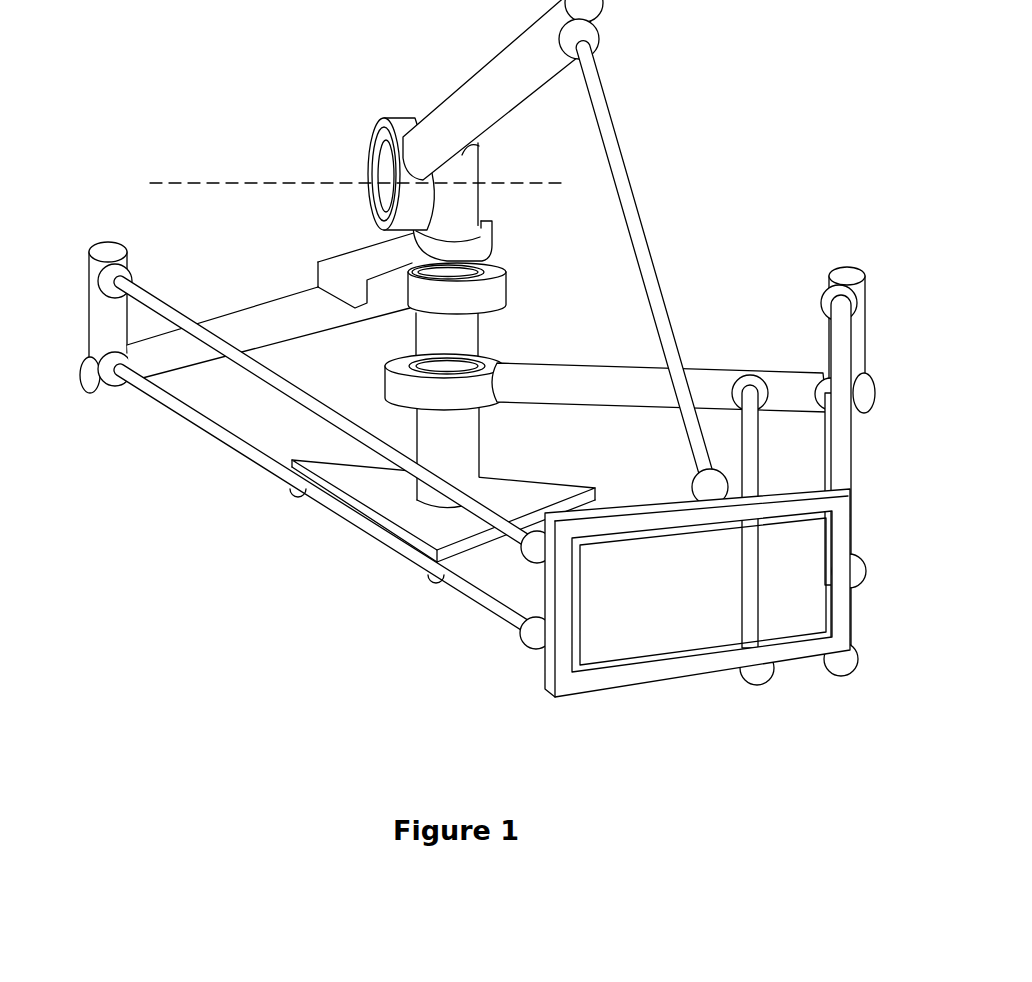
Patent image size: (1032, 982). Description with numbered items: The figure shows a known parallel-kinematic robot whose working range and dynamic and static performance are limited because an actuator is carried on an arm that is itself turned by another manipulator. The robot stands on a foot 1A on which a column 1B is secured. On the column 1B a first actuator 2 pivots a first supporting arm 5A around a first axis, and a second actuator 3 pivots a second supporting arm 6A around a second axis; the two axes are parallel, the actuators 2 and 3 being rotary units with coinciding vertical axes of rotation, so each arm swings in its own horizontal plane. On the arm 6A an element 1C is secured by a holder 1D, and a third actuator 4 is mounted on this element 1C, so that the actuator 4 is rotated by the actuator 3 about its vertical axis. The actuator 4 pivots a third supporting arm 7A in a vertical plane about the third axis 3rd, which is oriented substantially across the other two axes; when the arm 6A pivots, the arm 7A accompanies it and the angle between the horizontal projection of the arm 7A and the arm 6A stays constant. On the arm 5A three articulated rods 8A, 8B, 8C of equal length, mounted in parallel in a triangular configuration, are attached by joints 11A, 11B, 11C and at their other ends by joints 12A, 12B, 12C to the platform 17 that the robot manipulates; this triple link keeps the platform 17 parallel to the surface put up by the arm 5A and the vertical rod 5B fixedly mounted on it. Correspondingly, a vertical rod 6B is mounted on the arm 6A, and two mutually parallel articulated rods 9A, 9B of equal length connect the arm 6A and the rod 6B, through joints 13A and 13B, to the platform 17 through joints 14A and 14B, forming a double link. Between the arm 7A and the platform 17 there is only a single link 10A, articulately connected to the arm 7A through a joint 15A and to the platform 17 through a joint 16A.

The foot 1A is at (520, 493).
The column 1B is at (458, 337).
The element 1C is at (458, 168).
The holder 1D is at (470, 245).
The first actuator 2 is at (397, 383).
The second actuator 3 is at (492, 288).
The third actuator 4 is at (383, 132).
The third axis 3rd is at (185, 183).
The first supporting arm 5A is at (637, 383).
The vertical rod 5B is at (868, 330).
The second supporting arm 6A is at (287, 307).
The vertical rod 6B is at (97, 312).
The third supporting arm 7A is at (482, 88).
The articulated rod 8A is at (843, 438).
The articulated rod 8B is at (828, 470).
The articulated rod 8C is at (750, 552).
The articulated rod 9A is at (283, 387).
The articulated rod 9B is at (223, 438).
The link 10A is at (623, 178).
The joint 11A is at (828, 282).
The joint 11B is at (822, 387).
The joint 11C is at (747, 383).
The joint 12A is at (858, 570).
The joint 12B is at (848, 672).
The joint 12C is at (762, 683).
The joint 13A is at (105, 263).
The joint 13B is at (108, 380).
The joint 14A is at (540, 548).
The joint 14B is at (533, 630).
The joint 15A is at (585, 35).
The joint 16A is at (707, 487).
The platform 17 is at (640, 680).